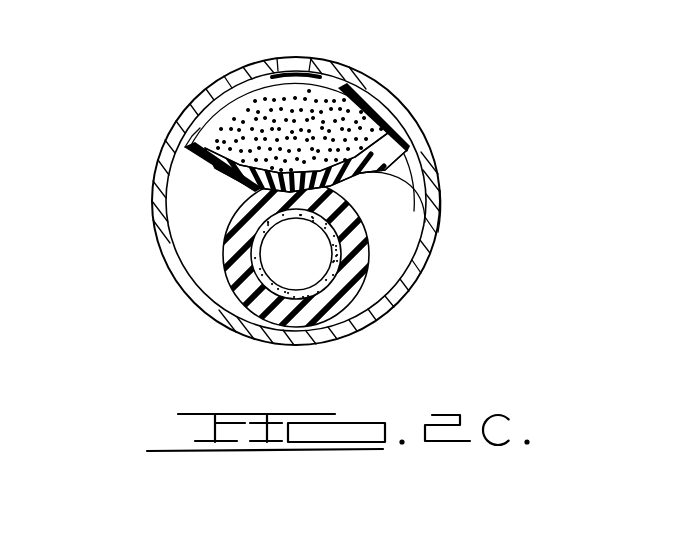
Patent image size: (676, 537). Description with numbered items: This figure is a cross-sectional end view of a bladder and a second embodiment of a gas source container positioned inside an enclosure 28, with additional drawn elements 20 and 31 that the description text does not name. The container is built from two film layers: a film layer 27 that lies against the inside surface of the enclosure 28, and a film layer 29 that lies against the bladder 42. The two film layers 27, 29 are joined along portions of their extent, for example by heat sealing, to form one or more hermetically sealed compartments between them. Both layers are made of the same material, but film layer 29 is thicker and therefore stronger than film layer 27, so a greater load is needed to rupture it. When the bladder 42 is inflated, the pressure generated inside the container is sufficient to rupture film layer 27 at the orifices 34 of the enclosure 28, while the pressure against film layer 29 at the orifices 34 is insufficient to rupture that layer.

The expandable body 20 is at (366, 80).
The film layer 27 is at (382, 111).
The enclosure 28 is at (212, 93).
The film layer 29 is at (443, 213).
The membrane 31 is at (184, 147).
The orifices 34 is at (292, 66).
The bladder 42 is at (230, 247).